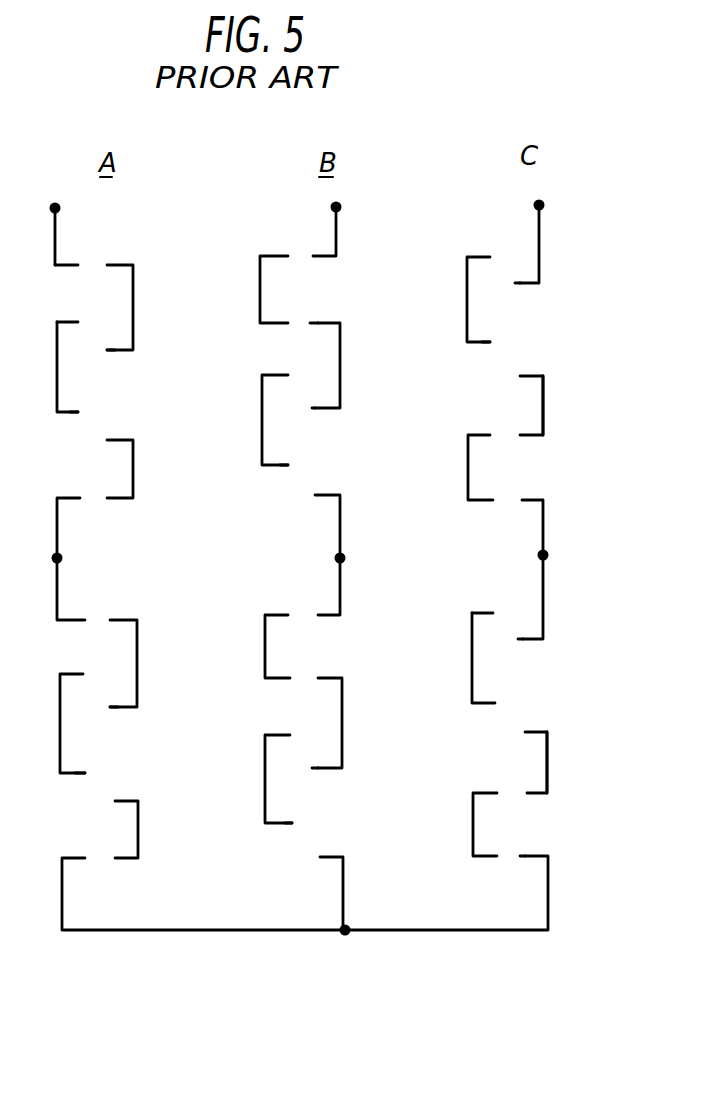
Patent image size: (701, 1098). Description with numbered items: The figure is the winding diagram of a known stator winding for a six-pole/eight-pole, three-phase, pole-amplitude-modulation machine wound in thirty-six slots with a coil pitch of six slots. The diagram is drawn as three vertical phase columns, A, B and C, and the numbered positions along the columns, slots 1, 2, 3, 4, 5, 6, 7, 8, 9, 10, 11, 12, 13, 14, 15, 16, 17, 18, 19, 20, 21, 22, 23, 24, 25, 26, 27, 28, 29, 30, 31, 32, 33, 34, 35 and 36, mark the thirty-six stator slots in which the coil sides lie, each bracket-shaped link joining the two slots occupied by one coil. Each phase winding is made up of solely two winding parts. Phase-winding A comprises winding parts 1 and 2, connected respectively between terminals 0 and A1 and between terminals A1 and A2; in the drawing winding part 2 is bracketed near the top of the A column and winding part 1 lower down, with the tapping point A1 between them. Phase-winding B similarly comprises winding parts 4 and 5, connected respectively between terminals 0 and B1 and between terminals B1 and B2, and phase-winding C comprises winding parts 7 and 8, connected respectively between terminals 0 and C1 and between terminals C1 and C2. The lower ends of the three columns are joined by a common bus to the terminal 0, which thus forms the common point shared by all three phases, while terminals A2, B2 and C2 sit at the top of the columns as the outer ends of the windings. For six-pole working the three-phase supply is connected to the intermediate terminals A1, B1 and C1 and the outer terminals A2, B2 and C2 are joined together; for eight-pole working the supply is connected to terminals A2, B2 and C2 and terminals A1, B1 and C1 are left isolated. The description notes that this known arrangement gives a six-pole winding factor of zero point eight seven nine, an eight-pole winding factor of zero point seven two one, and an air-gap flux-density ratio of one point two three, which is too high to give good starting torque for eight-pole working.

The common terminal 0 is at (342, 934).
The winding part 1 is at (46, 724).
The winding part 2 is at (135, 303).
The slot 3 coil side 3 is at (511, 639).
The winding part 4 is at (359, 713).
The winding part 5 is at (357, 360).
The slot 6 coil side 6 is at (105, 706).
The winding part 7 is at (564, 767).
The winding part 8 is at (545, 395).
The slot 9 coil side 9 is at (286, 775).
The slot 10 coil side 10 is at (305, 769).
The slot 11 coil side 11 is at (96, 773).
The slot 12 coil side 12 is at (114, 823).
The slot 13 coil side 13 is at (500, 819).
The slot 14 coil side 14 is at (303, 824).
The slot 15 coil side 15 is at (319, 887).
The slot 16 coil side 16 is at (305, 888).
The slot 17 coil side 17 is at (289, 283).
The slot 18 coil side 18 is at (513, 859).
The slot 19 coil side 19 is at (82, 265).
The slot 20 coil side 20 is at (494, 293).
The slot 21 coil side 21 is at (510, 284).
The slot 22 coil side 22 is at (304, 324).
The slot 23 coil side 23 is at (83, 321).
The slot 24 coil side 24 is at (99, 351).
The slot 25 coil side 25 is at (503, 344).
The slot 26 coil side 26 is at (518, 399).
The slot 27 coil side 27 is at (290, 412).
The slot 28 coil side 28 is at (303, 409).
The slot 29 coil side 29 is at (90, 411).
The slot 30 coil side 30 is at (107, 463).
The slot 31 coil side 31 is at (495, 462).
The slot 32 coil side 32 is at (299, 466).
The slot 33 coil side 33 is at (314, 522).
The slot 34 coil side 34 is at (83, 522).
The slot 35 coil side 35 is at (291, 641).
The slot 36 coil side 36 is at (519, 521).
The winding terminal A1 is at (75, 583).
The winding terminal A2 is at (53, 222).
The winding terminal B1 is at (349, 581).
The winding terminal B2 is at (344, 218).
The winding terminal C1 is at (553, 591).
The winding terminal C2 is at (548, 232).